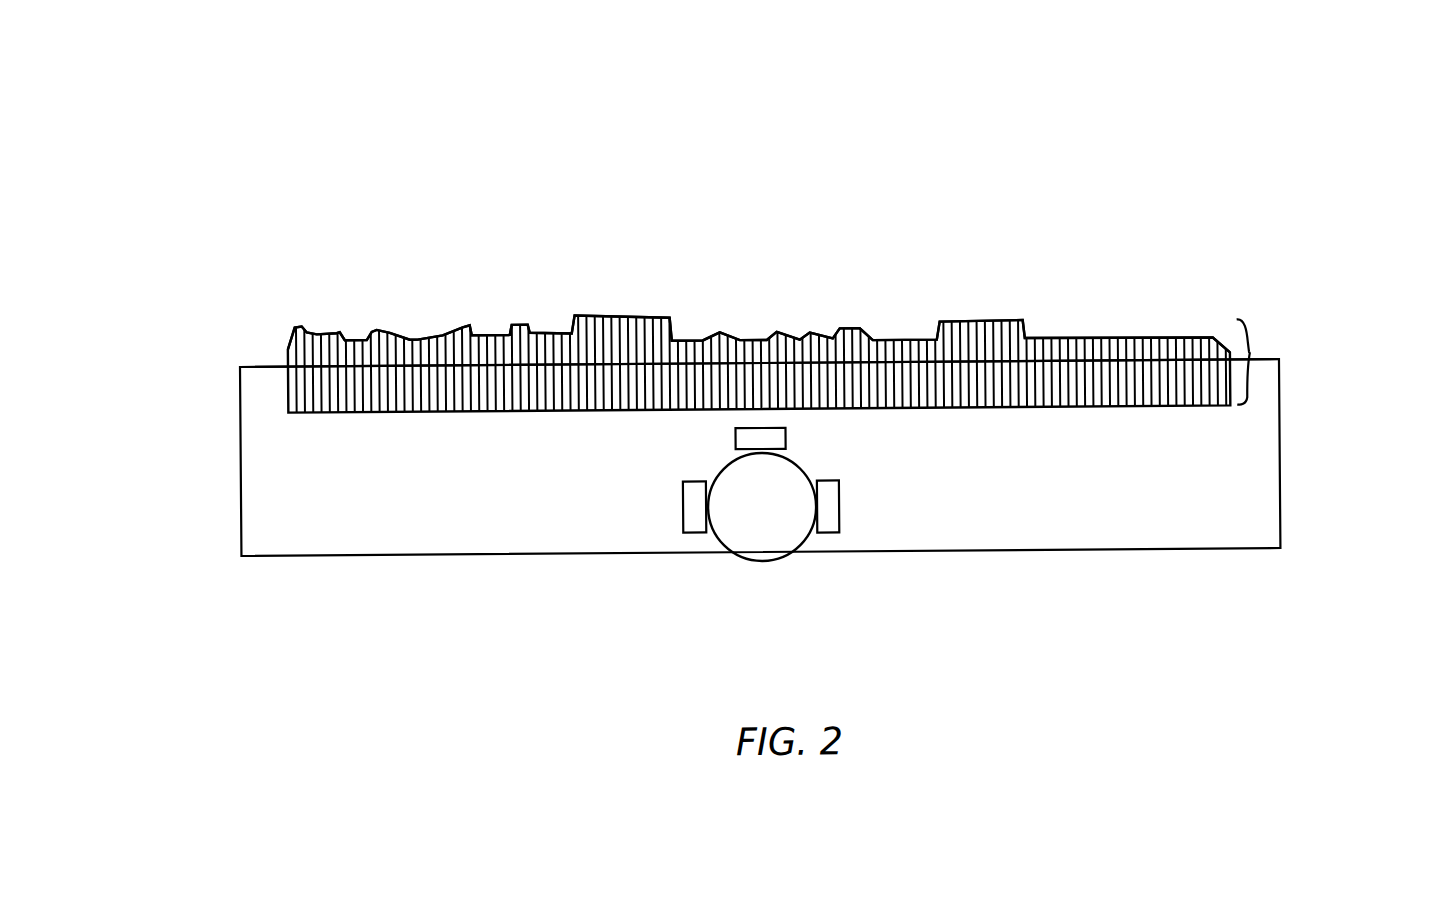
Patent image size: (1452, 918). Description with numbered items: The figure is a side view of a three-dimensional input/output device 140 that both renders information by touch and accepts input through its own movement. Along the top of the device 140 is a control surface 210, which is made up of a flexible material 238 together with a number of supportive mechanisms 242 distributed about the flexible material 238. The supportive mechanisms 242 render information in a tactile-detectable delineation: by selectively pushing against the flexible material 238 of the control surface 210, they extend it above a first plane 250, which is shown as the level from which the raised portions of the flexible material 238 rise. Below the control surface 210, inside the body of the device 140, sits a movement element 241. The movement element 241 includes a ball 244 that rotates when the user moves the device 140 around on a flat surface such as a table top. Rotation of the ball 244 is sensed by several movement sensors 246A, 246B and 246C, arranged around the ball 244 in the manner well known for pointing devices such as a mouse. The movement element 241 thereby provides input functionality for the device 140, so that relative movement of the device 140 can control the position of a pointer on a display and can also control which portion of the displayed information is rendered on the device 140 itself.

The three-dimensional input/output device 140 is at (1278, 178).
The control surface 210 is at (805, 289).
The flexible material 238 is at (1065, 344).
The supportive mechanisms 242 is at (1249, 360).
The first plane 250 is at (214, 366).
The movement element 241 is at (860, 491).
The ball 244 is at (776, 533).
The movement sensor 246A is at (680, 508).
The movement sensor 246B is at (785, 441).
The movement sensor 246C is at (838, 511).